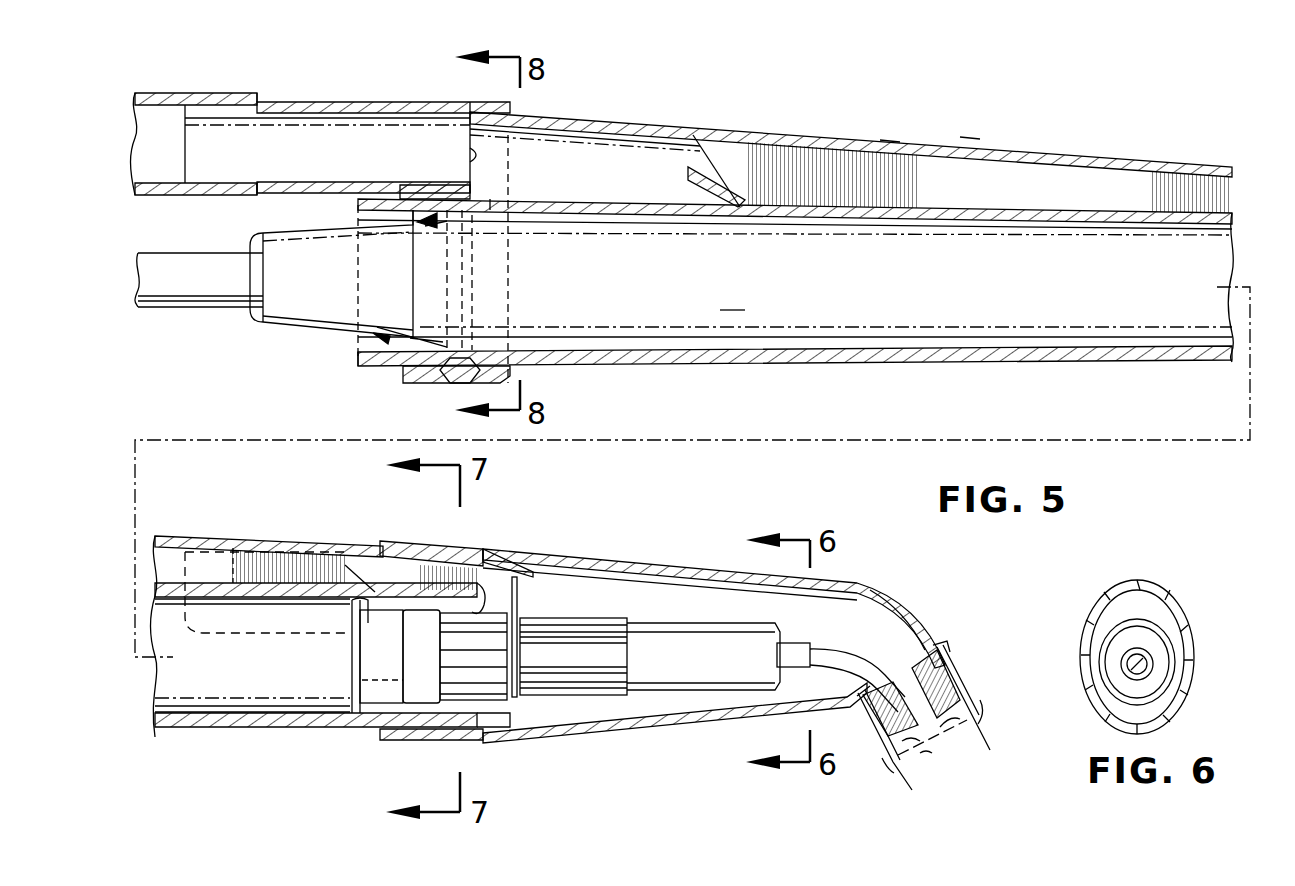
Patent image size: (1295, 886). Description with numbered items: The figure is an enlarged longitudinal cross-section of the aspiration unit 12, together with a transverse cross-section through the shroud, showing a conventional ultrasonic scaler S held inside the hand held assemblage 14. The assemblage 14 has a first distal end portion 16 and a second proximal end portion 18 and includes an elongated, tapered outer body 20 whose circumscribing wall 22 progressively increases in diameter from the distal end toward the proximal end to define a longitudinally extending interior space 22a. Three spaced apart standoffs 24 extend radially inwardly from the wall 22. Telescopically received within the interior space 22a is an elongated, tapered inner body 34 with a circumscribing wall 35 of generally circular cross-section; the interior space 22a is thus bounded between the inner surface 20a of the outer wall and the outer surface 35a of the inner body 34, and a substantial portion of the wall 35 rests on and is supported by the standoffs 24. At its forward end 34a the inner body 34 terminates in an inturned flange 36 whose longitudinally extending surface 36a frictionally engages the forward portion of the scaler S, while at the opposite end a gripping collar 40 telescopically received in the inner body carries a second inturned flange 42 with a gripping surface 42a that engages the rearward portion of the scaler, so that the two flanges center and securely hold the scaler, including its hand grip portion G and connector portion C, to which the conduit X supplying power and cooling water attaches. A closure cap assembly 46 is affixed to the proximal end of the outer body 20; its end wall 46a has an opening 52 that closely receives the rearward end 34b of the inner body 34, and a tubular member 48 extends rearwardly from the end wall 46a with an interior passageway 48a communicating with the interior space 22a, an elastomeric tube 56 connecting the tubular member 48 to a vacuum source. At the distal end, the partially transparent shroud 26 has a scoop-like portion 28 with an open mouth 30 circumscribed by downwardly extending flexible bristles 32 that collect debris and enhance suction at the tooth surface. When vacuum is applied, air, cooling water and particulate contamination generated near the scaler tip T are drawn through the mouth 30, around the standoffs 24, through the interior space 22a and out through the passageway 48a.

In FIG. 5, the aspiration unit 12 is at (995, 93).
In FIG. 5, the hand held assemblage 14 is at (920, 100).
In FIG. 5, the first distal end portion 16 is at (428, 554).
In FIG. 5, the second proximal end portion 18 is at (567, 92).
In FIG. 5, the outer body 20 is at (845, 98).
In FIG. 5, the inner surface of wall 20a is at (588, 148).
In FIG. 5, the circumscribing wall 22 is at (1075, 104).
In FIG. 5, the interior space 22a is at (675, 155).
In FIG. 5, the standoffs 24 is at (730, 95).
In FIG. 5, the shroud 26 is at (698, 578).
In FIG. 6, the shroud 26 is at (1172, 563).
In FIG. 5, the scoop-like portion 28 is at (935, 582).
In FIG. 5, the open mouth 30 is at (978, 663).
In FIG. 5, the flexible bristles 32 is at (997, 680).
In FIG. 5, the inner body 34 is at (1150, 142).
In FIG. 5, the first forward end 34a is at (520, 756).
In FIG. 5, the end of inner body 34b is at (364, 367).
In FIG. 5, the circumscribing wall of inner body 35 is at (1040, 265).
In FIG. 5, the outer surface of inner body 35a is at (527, 179).
In FIG. 5, the inturned flange 36 is at (418, 762).
In FIG. 5, the longitudinally extending surface 36a is at (515, 576).
In FIG. 5, the gripping collar 40 is at (379, 340).
In FIG. 5, the inturned flange 42 is at (430, 220).
In FIG. 5, the gripping surface 42a is at (520, 258).
In FIG. 5, the closure cap assembly 46 is at (452, 383).
In FIG. 5, the end wall 46a is at (468, 150).
In FIG. 5, the tubular member 48 is at (300, 102).
In FIG. 5, the interior passageway 48a is at (327, 137).
In FIG. 5, the opening 52 is at (458, 365).
In FIG. 5, the elastomeric tube 56 is at (214, 100).
In FIG. 5, the conduit X is at (175, 331).
In FIG. 5, the connector portion C is at (292, 320).
In FIG. 5, the scaler S is at (602, 745).
In FIG. 6, the scaler S is at (1215, 660).
In FIG. 5, the scaler tip T is at (862, 662).
In FIG. 6, the scaler tip T is at (1203, 698).
In FIG. 5, the hand grip portion G is at (731, 389).
In FIG. 5, the skin junction J is at (932, 736).